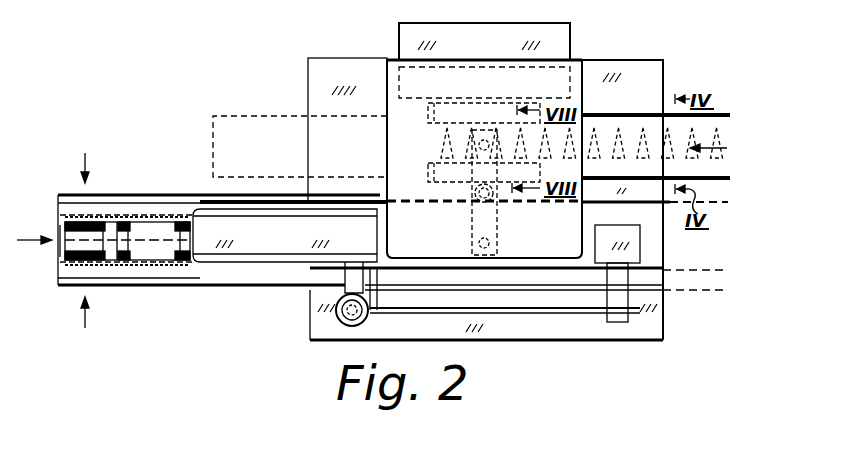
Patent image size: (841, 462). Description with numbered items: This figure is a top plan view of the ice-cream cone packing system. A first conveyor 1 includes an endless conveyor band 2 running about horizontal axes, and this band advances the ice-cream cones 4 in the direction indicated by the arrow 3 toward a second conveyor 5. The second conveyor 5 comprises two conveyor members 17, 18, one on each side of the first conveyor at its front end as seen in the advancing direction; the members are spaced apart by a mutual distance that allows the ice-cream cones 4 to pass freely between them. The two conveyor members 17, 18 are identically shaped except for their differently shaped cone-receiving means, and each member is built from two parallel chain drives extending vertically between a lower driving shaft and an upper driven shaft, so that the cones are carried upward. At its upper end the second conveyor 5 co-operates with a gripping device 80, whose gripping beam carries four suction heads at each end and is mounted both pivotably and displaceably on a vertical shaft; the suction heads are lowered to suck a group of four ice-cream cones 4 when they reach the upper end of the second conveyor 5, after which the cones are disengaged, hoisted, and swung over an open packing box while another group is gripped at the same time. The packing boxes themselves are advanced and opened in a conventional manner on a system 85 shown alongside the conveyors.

The first conveyor 1 is at (712, 112).
The endless conveyor band 2 is at (648, 122).
The arrow 3 is at (706, 120).
The ice-cream cones 4 is at (618, 152).
The second conveyor 5 is at (536, 184).
The conveyor member 17 is at (432, 170).
The conveyor member 18 is at (437, 116).
The gripping device 80 is at (503, 221).
The system 85 is at (237, 288).